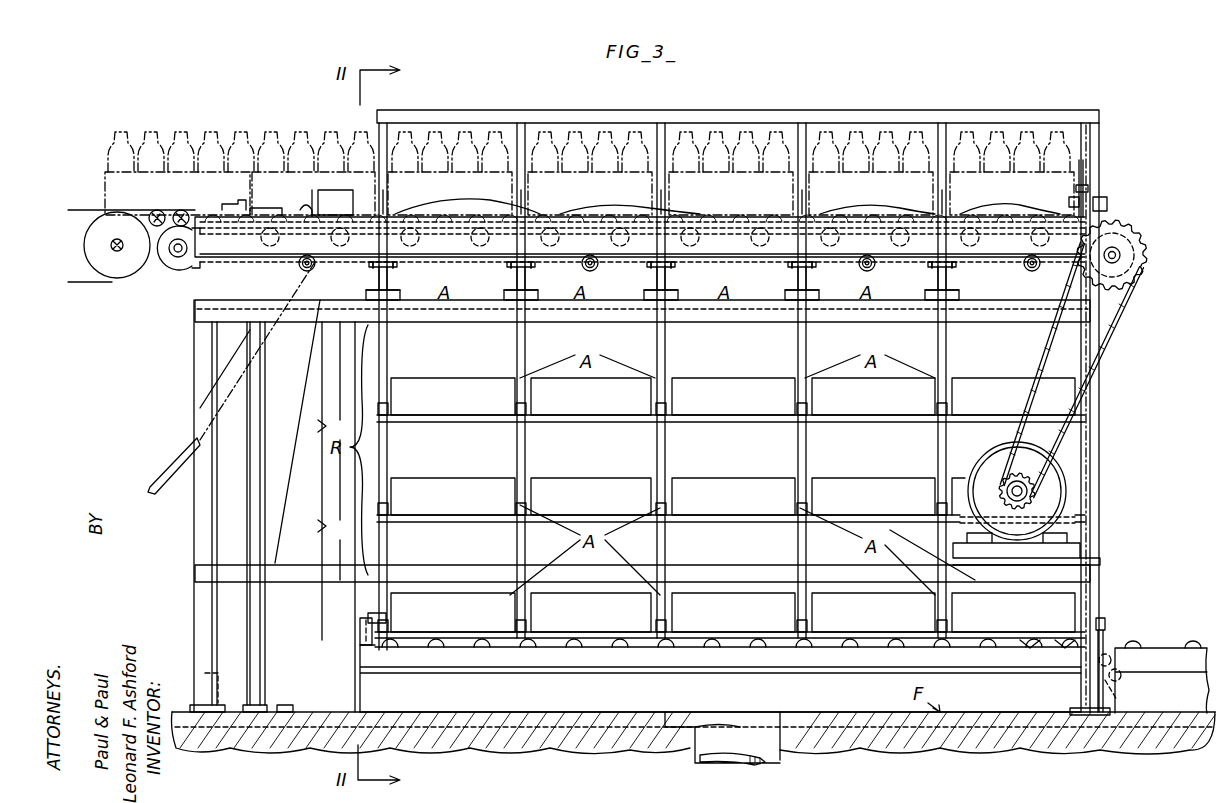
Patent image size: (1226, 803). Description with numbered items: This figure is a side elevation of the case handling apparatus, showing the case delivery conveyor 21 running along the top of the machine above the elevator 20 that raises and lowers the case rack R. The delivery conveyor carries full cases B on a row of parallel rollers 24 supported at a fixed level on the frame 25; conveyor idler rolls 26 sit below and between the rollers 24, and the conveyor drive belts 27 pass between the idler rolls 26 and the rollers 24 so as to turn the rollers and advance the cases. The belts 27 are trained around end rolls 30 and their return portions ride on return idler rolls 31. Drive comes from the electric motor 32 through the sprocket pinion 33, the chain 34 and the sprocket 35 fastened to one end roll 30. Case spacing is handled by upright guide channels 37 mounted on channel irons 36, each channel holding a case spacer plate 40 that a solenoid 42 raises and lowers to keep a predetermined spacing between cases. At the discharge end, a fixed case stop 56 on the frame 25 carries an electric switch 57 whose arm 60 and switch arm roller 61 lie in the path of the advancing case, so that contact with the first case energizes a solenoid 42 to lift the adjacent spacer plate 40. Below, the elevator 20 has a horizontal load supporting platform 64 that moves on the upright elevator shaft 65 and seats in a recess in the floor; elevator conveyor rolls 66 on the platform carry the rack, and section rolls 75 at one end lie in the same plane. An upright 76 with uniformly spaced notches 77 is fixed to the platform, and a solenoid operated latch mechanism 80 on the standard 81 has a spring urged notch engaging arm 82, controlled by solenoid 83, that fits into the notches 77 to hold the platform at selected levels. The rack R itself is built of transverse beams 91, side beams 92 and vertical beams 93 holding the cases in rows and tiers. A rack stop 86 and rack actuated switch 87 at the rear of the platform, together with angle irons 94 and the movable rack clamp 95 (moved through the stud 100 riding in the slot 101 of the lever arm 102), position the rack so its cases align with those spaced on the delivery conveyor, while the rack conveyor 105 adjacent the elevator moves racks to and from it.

The elevator 20 is at (720, 696).
The case delivery conveyor 21 is at (780, 200).
The rollers 24 is at (478, 215).
The frame 25 is at (182, 270).
The conveyor idler rolls 26 is at (472, 252).
The conveyor drive belts 27 is at (240, 262).
The end rolls 30 is at (170, 262).
The return idler rolls 31 is at (308, 272).
The electric motor 32 is at (1055, 490).
The sprocket pinion 33 is at (1018, 478).
The chain 34 is at (1120, 320).
The sprocket 35 is at (1125, 256).
The channel irons 36 is at (538, 298).
The upright guide channels 37 is at (375, 280).
The case spacer plates 40 is at (382, 205).
The solenoid 42 is at (394, 266).
The fixed case stop 56 is at (1084, 168).
The electric switch 57 is at (1108, 202).
The arm 60 is at (1085, 188).
The switch arm roller 61 is at (1068, 201).
The load supporting platform 64 is at (352, 700).
The elevator shaft 65 is at (740, 760).
The elevator conveyor rolls 66 is at (512, 642).
The section rolls 75 is at (1065, 642).
The upright 76 is at (312, 206).
The notches 77 is at (305, 648).
The solenoid operated latch mechanism 80 is at (236, 203).
The standard 81 is at (250, 415).
The notch engaging arm 82 is at (304, 212).
The solenoid 83 is at (268, 206).
The rack stop 86 is at (368, 612).
The rack actuated switch 87 is at (360, 623).
The transverse beams 91 is at (515, 408).
The side beams 92 is at (718, 322).
The vertical beams 93 is at (388, 442).
The angle irons 94 is at (390, 625).
The movable rack clamp 95 is at (1100, 622).
The stud 100 is at (1122, 678).
The slot 101 is at (1115, 690).
The lever arm 102 is at (1118, 657).
The rack conveyor 105 is at (1205, 638).